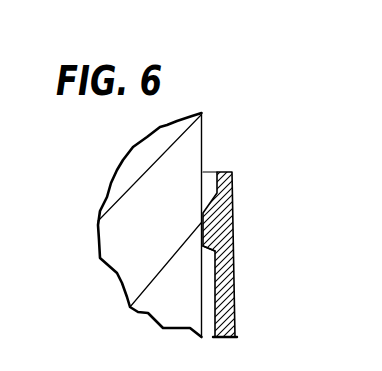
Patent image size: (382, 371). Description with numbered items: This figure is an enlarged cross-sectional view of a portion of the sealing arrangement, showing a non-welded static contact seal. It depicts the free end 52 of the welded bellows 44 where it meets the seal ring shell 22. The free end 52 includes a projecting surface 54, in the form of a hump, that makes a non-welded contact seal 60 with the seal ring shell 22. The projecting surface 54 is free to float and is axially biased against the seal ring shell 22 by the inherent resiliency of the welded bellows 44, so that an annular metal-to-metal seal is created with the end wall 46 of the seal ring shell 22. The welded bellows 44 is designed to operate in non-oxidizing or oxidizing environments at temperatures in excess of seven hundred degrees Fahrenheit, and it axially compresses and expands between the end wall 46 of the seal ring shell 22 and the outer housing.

The seal ring shell 22 is at (132, 217).
The welded bellows 44 is at (233, 306).
The end wall 46 is at (203, 150).
The free end 52 is at (207, 172).
The projecting surface 54 is at (207, 241).
The non-welded contact seal 60 is at (202, 223).